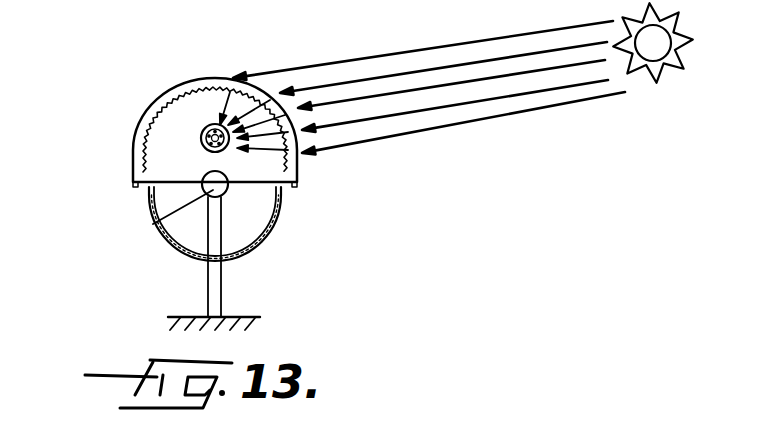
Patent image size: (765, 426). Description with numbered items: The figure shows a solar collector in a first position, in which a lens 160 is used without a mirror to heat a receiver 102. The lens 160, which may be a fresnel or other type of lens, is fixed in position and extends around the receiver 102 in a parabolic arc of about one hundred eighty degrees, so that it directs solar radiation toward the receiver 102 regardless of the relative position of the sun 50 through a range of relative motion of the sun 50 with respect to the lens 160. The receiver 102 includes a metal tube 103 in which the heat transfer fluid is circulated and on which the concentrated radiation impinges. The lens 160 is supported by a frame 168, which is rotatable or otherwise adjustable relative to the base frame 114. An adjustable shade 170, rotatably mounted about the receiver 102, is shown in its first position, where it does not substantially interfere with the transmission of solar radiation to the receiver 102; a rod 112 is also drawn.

The lens 160 is at (178, 74).
The receiver 102 is at (188, 109).
The metal tube 103 is at (189, 130).
The sun 50 is at (668, 67).
The pivot rod 112 is at (153, 224).
The frame 168 is at (265, 190).
The adjustable shade 170 is at (263, 240).
The base frame 114 is at (205, 280).